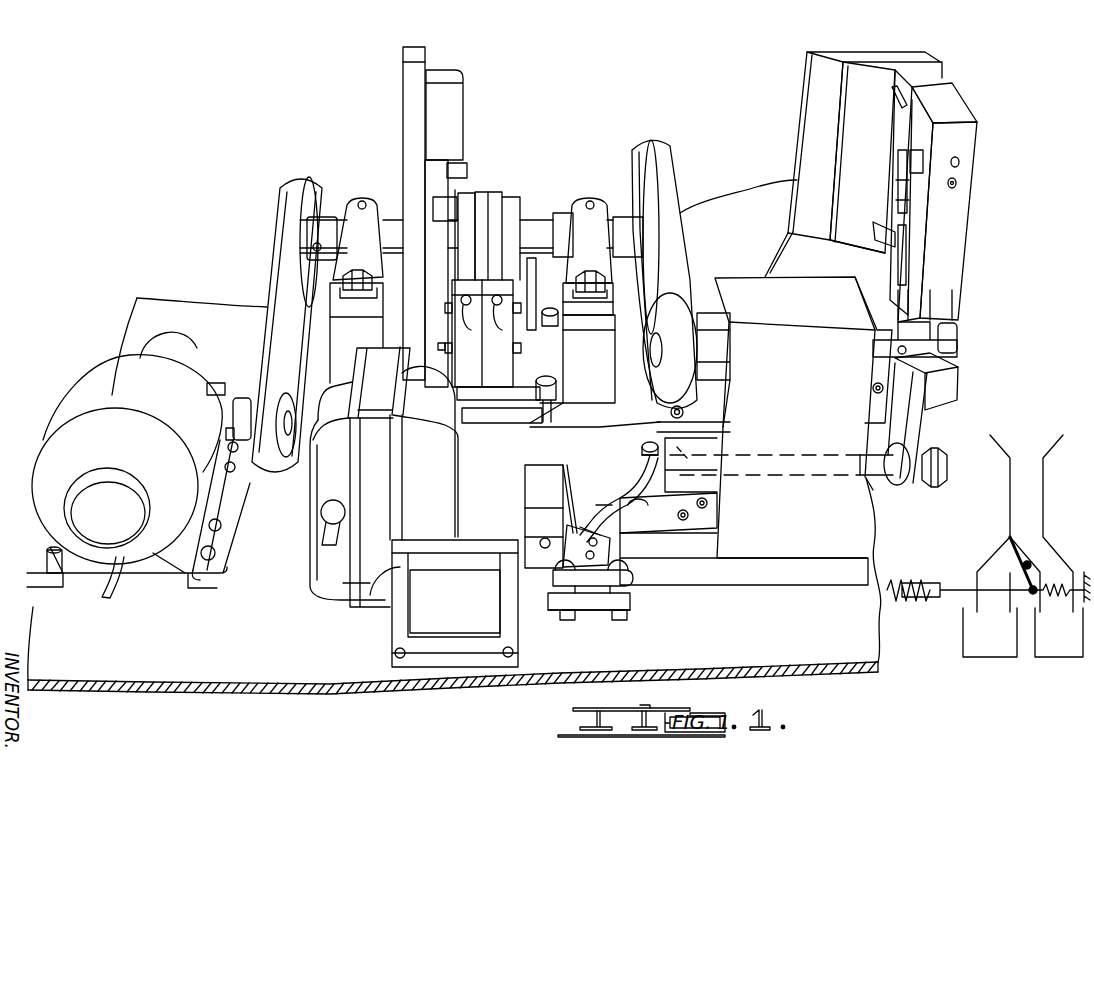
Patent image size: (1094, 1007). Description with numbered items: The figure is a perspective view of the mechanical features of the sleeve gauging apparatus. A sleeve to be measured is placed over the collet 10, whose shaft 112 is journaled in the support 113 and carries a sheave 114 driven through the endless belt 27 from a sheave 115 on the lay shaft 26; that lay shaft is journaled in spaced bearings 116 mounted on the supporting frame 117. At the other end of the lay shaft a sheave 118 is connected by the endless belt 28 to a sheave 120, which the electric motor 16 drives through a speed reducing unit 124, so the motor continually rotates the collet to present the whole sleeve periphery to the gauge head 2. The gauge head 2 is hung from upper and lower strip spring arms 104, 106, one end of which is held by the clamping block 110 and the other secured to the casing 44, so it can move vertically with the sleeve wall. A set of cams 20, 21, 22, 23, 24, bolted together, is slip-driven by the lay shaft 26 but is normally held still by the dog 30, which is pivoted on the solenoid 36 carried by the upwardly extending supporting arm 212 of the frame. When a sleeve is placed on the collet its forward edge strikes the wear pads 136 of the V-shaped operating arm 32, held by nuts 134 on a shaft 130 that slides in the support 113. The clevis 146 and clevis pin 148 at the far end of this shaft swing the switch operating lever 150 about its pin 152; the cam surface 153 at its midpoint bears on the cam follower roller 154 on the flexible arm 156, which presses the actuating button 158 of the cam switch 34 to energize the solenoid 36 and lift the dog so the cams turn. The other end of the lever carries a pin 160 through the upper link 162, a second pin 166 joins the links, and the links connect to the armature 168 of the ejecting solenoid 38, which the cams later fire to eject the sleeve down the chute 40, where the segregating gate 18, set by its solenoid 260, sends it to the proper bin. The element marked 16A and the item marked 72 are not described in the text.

The gauge head 2 is at (981, 234).
The collet 10 is at (963, 327).
The electric motor 16 is at (88, 373).
The motor base bar 16A is at (578, 622).
The segregating gate 18 is at (1027, 567).
The cam 20 is at (452, 237).
The cam 21 is at (478, 228).
The cam 22 is at (495, 200).
The cam 23 is at (508, 212).
The cam 24 is at (524, 213).
The lay shaft 26 is at (623, 213).
The endless belt 27 is at (680, 240).
The endless belt 28 is at (276, 267).
The dog 30 is at (447, 223).
The operating arm 32 is at (923, 422).
The cam switch 34 is at (545, 467).
The solenoid 36 is at (463, 97).
The ejecting solenoid 38 is at (417, 617).
The chute 40 is at (1008, 508).
The casing 44 is at (950, 107).
The guide 72 is at (900, 198).
The upper strip spring arm 104 is at (903, 97).
The lower strip spring arm 106 is at (890, 250).
The clamping block 110 is at (895, 148).
The shaft 112 is at (630, 360).
The support 113 is at (813, 410).
The sheave 114 is at (630, 380).
The sheave 115 is at (680, 167).
The bearings 116 is at (362, 198).
The supporting frame 117 is at (540, 358).
The sheave 118 is at (283, 190).
The sheave 120 is at (248, 380).
The speed reducing unit 124 is at (220, 383).
The shaft 130 is at (883, 508).
The nuts 134 is at (923, 482).
The wear pad 136 is at (967, 370).
The clevis 146 is at (640, 447).
The clevis pin 148 is at (657, 440).
The switch operating lever 150 is at (640, 477).
The pin 152 is at (643, 507).
The cam surface 153 is at (610, 487).
The cam follower roller 154 is at (563, 528).
The flexible arm 156 is at (574, 507).
The actuating button 158 is at (567, 523).
The pin 160 is at (618, 618).
The upper link 162 is at (592, 588).
The pin 166 is at (642, 573).
The armature 168 is at (540, 600).
The supporting arm 212 is at (403, 100).
The solenoid 260 is at (903, 578).